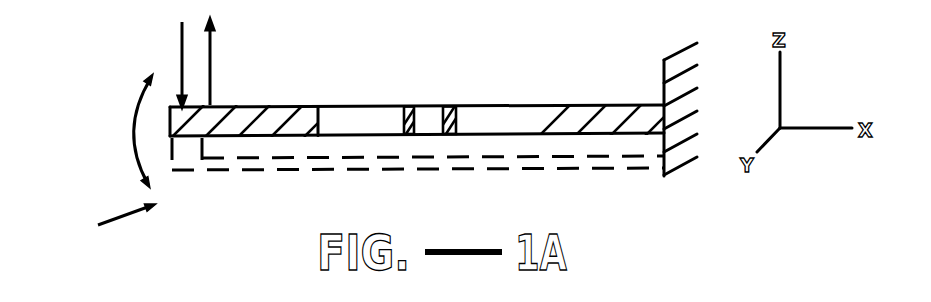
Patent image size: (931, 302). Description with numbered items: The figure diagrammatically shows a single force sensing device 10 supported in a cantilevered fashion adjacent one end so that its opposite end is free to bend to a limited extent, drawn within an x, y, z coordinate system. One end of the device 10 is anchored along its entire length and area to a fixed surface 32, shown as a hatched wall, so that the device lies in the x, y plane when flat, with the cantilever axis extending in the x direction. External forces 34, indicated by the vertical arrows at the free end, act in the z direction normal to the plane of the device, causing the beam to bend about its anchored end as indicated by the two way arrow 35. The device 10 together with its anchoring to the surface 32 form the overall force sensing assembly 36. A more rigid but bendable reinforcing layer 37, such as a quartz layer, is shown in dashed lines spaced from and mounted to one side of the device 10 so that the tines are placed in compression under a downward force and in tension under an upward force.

The force sensing device 10 is at (306, 102).
The fixed surface 32 is at (687, 77).
The external forces 34 is at (178, 50).
The two way arrow 35 is at (132, 127).
The overall force sensing assembly 36 is at (111, 222).
The reinforcing layer 37 is at (296, 167).